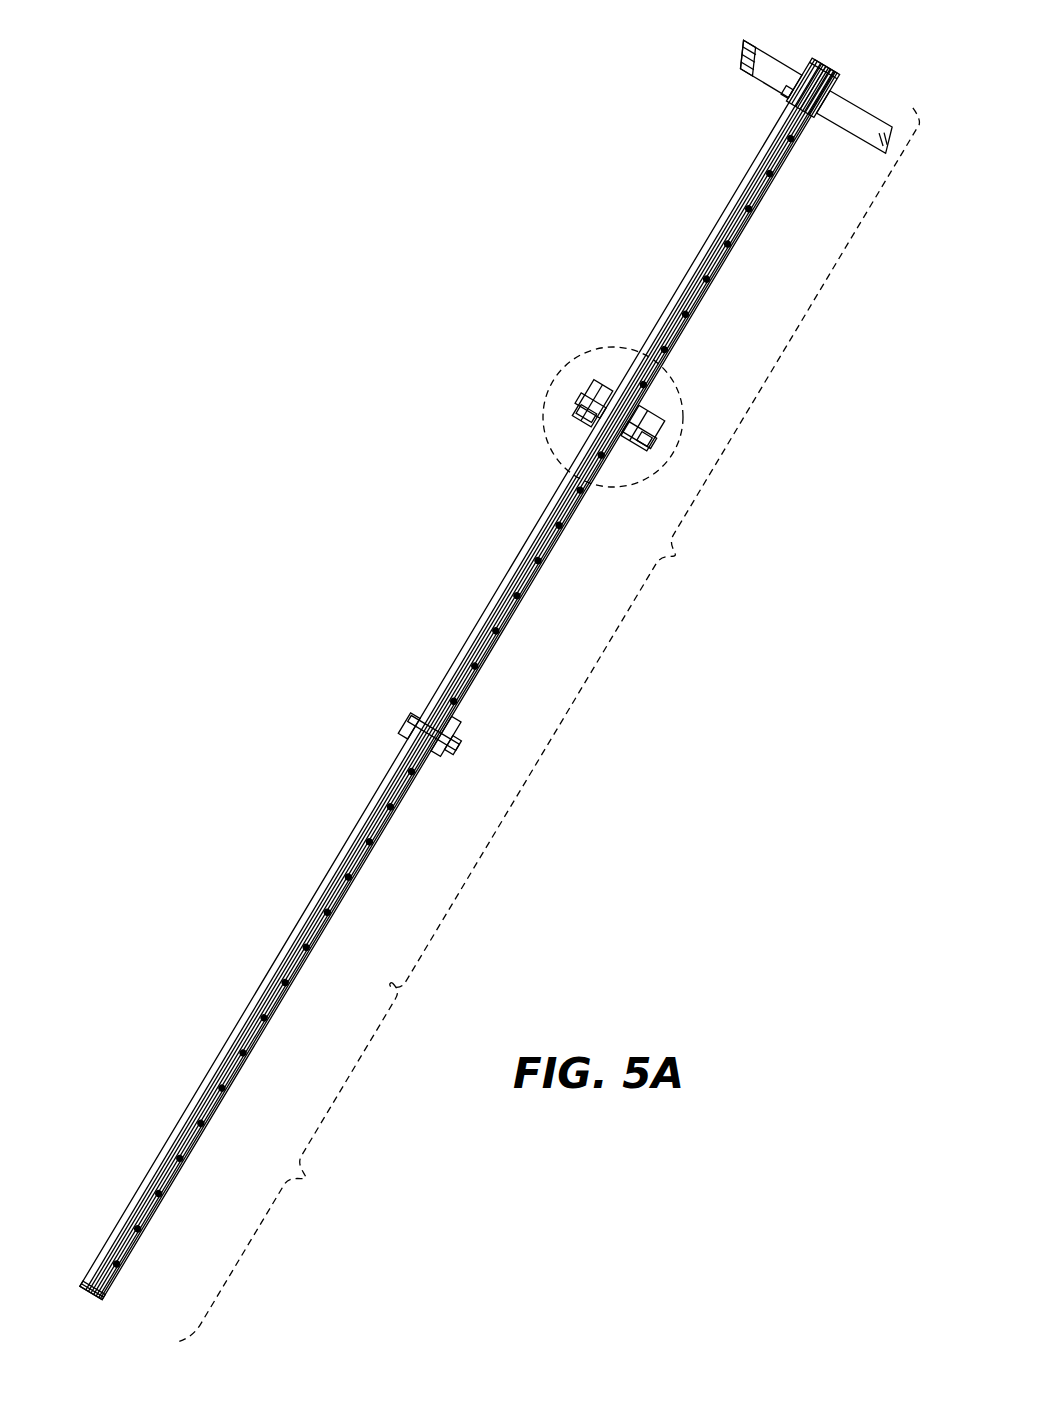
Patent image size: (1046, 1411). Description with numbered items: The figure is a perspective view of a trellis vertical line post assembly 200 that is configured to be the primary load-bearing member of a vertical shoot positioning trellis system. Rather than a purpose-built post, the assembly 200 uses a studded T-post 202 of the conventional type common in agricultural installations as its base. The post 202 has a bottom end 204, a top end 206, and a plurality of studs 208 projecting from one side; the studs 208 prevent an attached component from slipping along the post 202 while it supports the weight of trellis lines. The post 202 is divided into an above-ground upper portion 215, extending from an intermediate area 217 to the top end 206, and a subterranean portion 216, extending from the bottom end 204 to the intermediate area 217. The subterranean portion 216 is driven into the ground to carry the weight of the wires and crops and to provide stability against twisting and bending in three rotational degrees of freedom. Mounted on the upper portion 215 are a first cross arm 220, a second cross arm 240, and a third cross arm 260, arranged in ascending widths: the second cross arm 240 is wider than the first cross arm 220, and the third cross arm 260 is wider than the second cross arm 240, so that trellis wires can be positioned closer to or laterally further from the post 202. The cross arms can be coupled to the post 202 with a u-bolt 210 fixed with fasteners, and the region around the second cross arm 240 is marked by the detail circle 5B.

The trellis vertical line post assembly 200 is at (476, 210).
The studded T-post 202 is at (538, 523).
The bottom end 204 is at (92, 1299).
The top end 206 is at (833, 70).
The studs 208 is at (541, 561).
The u-bolt 210 is at (582, 407).
The above-ground upper portion 215 is at (662, 553).
The subterranean portion 216 is at (296, 1169).
The intermediate area 217 is at (395, 987).
The first cross arm 220 is at (458, 720).
The second cross arm 240 is at (656, 418).
The third cross arm 260 is at (752, 88).
The detail view circle 5B is at (573, 356).